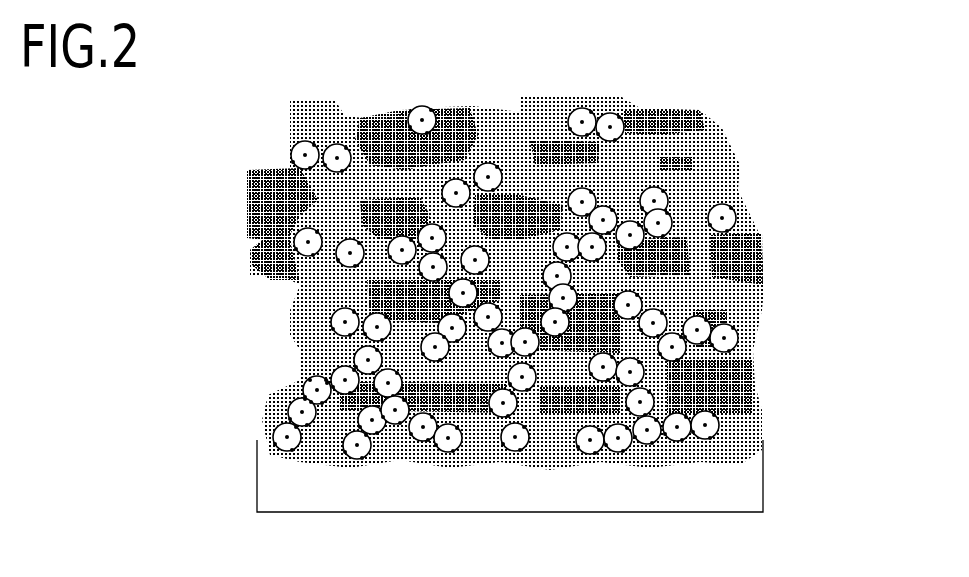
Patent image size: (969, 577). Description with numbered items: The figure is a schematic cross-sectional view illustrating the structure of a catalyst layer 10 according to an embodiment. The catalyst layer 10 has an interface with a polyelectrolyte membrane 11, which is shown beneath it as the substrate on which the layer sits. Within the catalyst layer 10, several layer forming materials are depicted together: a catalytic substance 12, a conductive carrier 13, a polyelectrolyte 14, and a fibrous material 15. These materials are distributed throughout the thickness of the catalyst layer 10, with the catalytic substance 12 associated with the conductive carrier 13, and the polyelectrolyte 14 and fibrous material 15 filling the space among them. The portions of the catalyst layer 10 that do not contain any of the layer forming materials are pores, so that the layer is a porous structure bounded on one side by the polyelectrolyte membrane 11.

The catalyst layer 10 is at (509, 283).
The polyelectrolyte membrane 11 is at (755, 490).
The catalytic substance 12 is at (283, 432).
The conductive carrier 13 is at (310, 390).
The polyelectrolyte 14 is at (303, 312).
The fibrous material 15 is at (277, 195).